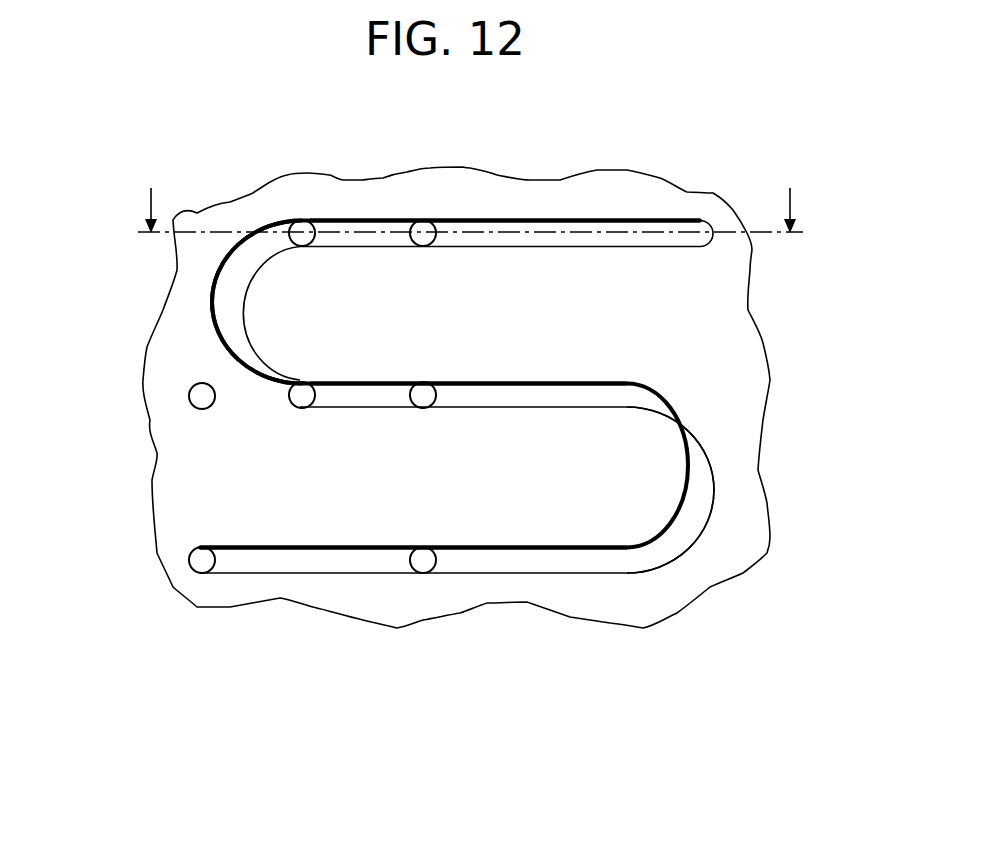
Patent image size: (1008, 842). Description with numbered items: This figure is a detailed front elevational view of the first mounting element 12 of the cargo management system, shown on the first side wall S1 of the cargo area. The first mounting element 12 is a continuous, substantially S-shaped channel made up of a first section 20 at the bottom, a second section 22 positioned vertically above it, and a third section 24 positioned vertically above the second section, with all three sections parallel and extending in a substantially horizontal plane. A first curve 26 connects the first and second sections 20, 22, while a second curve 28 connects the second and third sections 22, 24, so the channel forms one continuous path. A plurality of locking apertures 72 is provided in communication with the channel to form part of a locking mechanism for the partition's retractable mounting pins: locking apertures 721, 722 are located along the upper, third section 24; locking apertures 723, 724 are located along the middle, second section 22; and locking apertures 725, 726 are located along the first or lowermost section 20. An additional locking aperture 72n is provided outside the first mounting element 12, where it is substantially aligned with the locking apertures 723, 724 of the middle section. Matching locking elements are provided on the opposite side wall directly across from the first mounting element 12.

The first mounting element 12 is at (277, 405).
The first section 20 is at (497, 574).
The second section 22 is at (521, 382).
The third section 24 is at (532, 219).
The first curve 26 is at (715, 481).
The second curve 28 is at (211, 316).
The locking apertures 72 is at (277, 345).
The locking aperture 721 is at (424, 226).
The locking aperture 722 is at (302, 224).
The locking aperture 723 is at (303, 389).
The locking aperture 724 is at (424, 389).
The locking aperture 725 is at (203, 554).
The locking aperture 726 is at (424, 554).
The additional locking aperture 72n is at (190, 396).
The first side wall S1 is at (700, 323).